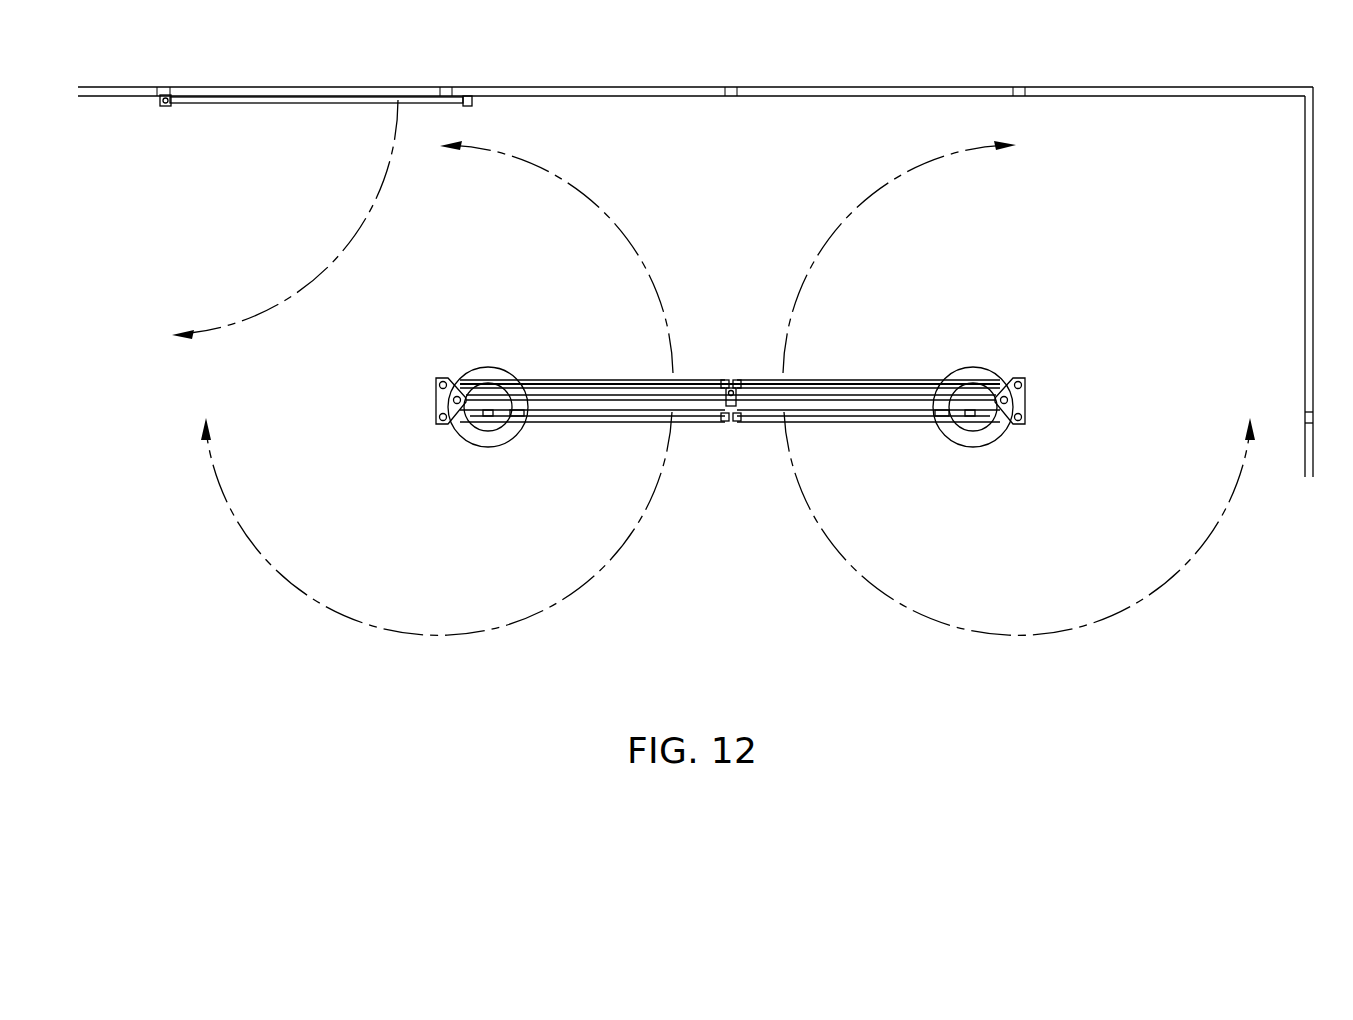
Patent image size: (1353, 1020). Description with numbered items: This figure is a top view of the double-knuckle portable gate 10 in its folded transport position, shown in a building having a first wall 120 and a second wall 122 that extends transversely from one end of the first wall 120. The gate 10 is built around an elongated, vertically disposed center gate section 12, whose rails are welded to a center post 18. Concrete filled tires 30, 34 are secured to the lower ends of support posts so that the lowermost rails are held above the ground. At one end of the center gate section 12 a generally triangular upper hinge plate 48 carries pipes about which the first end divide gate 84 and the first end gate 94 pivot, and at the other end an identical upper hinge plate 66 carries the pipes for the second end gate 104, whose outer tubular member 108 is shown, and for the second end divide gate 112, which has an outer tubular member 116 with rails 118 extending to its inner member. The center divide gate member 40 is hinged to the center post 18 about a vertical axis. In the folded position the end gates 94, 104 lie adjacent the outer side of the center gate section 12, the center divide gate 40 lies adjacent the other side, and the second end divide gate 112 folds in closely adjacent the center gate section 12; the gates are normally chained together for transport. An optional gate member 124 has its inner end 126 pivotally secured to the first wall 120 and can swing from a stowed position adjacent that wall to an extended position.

The double-knuckle portable gate 10 is at (726, 396).
The center gate section 12 is at (765, 425).
The center post 18 is at (793, 380).
The concrete filled tire 30 is at (503, 448).
The concrete filled tire 34 is at (978, 370).
The center divide gate member 40 is at (664, 366).
The upper hinge plate 48 is at (416, 399).
The upper hinge plate 66 is at (1050, 394).
The first end divide gate 84 is at (571, 362).
The first end gate 94 is at (626, 440).
The second end gate 104 is at (916, 440).
The outer tubular member 108 is at (735, 425).
The second end divide gate 112 is at (909, 352).
The outer tubular member 116 is at (736, 378).
The rails 118 is at (862, 380).
The first wall 120 is at (815, 86).
The second wall 122 is at (1305, 322).
The optional gate member 124 is at (293, 104).
The inner end 126 is at (167, 106).